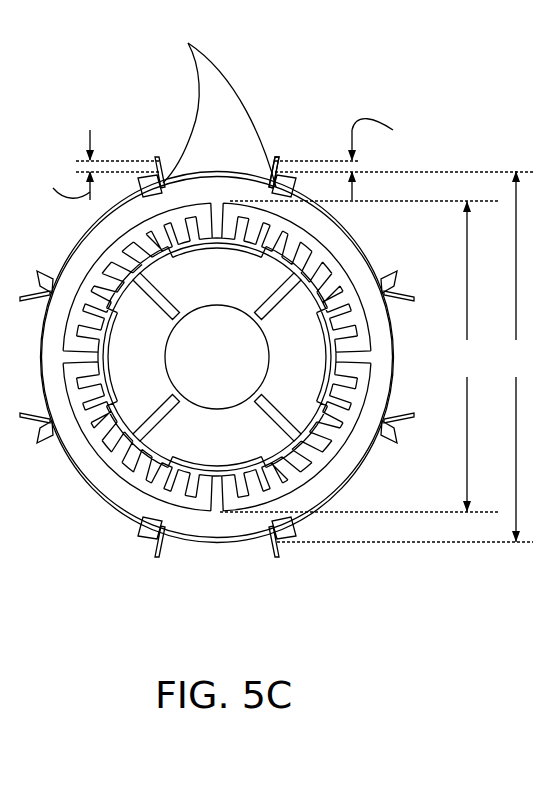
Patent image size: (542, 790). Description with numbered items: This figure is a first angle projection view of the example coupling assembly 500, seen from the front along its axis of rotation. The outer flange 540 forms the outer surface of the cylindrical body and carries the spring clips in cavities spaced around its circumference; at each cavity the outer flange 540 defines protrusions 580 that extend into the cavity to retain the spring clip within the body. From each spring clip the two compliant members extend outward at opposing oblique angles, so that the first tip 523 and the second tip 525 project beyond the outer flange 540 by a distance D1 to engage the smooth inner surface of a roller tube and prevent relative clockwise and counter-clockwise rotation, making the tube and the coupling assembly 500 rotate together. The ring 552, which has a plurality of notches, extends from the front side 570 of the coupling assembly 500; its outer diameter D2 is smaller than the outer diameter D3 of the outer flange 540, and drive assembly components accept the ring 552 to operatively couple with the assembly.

The coupling assembly 500 is at (74, 130).
The first tip 523 is at (163, 166).
The second tip 525 is at (275, 165).
The outer flange 540 is at (375, 238).
The ring 552 is at (123, 477).
The front side 570 is at (350, 465).
The protrusion 580 is at (210, 110).